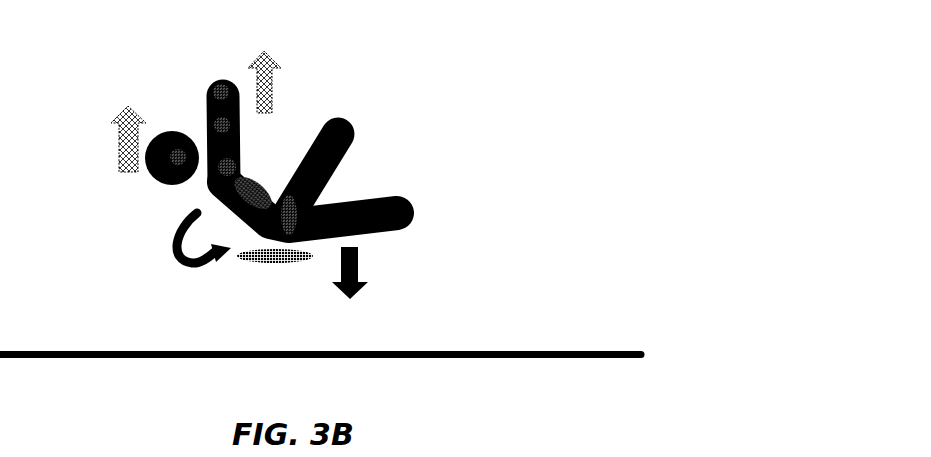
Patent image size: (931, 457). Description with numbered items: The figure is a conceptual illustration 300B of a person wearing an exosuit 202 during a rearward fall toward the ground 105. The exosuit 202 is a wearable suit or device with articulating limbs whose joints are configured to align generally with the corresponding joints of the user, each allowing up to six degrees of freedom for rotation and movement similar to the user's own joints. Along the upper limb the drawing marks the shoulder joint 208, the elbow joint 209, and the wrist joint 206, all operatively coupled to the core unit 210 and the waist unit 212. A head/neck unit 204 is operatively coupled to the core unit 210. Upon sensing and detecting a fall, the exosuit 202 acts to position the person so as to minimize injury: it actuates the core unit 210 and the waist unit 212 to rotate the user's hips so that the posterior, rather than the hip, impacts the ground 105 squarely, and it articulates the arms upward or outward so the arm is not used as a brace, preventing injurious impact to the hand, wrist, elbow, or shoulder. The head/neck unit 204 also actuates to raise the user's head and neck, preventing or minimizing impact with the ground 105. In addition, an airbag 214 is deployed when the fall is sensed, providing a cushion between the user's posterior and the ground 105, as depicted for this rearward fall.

The ground 105 is at (529, 352).
The exosuit 202 is at (264, 140).
The head/neck unit 204 is at (173, 168).
The wrist joint 206 is at (225, 80).
The shoulder joint 208 is at (236, 166).
The elbow joint 209 is at (232, 128).
The core unit 210 is at (253, 193).
The waist unit 212 is at (300, 211).
The airbag 214 is at (273, 264).
The fall scenario 300B is at (107, 74).